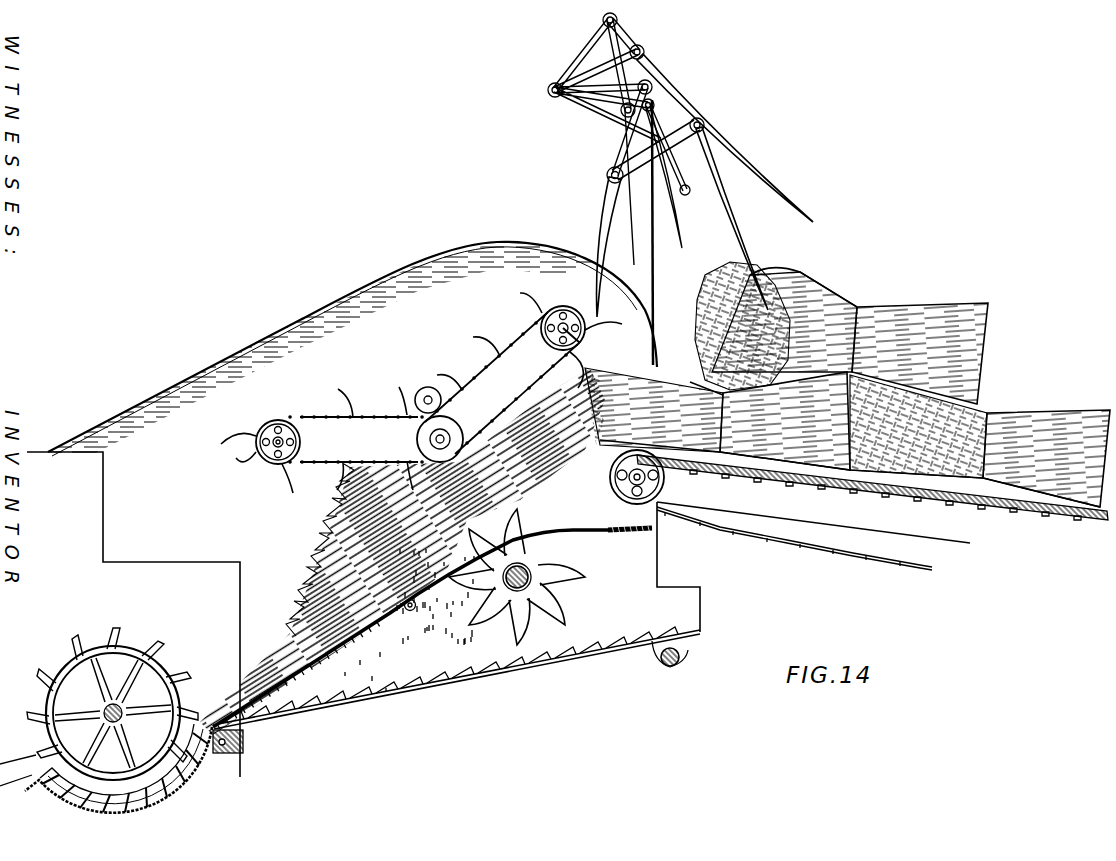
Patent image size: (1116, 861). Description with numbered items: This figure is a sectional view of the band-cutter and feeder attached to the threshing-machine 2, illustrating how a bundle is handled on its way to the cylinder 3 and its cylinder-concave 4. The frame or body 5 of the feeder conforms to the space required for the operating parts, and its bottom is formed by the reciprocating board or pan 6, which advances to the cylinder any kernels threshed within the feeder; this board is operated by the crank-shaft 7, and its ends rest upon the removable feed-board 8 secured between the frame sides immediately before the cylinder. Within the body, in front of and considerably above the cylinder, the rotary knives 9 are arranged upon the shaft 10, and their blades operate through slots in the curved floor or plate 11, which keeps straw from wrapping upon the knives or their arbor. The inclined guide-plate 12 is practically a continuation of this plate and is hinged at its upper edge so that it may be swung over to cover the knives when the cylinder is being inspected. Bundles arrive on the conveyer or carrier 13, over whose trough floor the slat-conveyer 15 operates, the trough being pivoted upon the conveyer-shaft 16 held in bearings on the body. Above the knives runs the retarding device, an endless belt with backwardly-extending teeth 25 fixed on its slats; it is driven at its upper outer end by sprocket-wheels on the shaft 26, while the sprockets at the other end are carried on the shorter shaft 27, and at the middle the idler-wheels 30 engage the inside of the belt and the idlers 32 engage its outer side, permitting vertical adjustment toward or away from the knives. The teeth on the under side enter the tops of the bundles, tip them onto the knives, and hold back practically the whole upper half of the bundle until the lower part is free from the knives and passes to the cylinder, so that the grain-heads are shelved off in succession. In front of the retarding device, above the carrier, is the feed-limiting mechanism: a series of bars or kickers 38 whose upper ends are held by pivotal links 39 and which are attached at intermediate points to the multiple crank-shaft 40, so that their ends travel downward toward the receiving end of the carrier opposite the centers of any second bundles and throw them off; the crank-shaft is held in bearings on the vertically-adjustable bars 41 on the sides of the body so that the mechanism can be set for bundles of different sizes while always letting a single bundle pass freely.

The threshing-machine 2 is at (363, 614).
The cylinder 3 is at (175, 693).
The cylinder-concave 4 is at (62, 802).
The frame or body of the band-cutter and feeder 5 is at (352, 349).
The reciprocating board or pan 6 is at (530, 668).
The crank-shaft 7 is at (681, 655).
The removable ledge or feed-board 8 is at (265, 735).
The rotary knives 9 is at (553, 557).
The knife shaft 10 is at (518, 575).
The curved floor or plate 11 is at (612, 534).
The inclined guide-plate 12 is at (407, 611).
The conveyer or carrier 13 is at (962, 530).
The slat-conveyer 15 is at (830, 557).
The conveyer-shaft 16 is at (666, 479).
The backwardly-extending teeth 25 is at (523, 373).
The shaft 26 is at (586, 340).
The shorter shaft 27 is at (277, 444).
The idler-wheels 30 is at (430, 438).
The idlers 32 is at (425, 391).
The bars or kickers 38 is at (603, 240).
The pivotal links 39 is at (583, 55).
The multiple crank-shaft 40 is at (688, 134).
The vertically-adjustable bars 41 is at (645, 265).